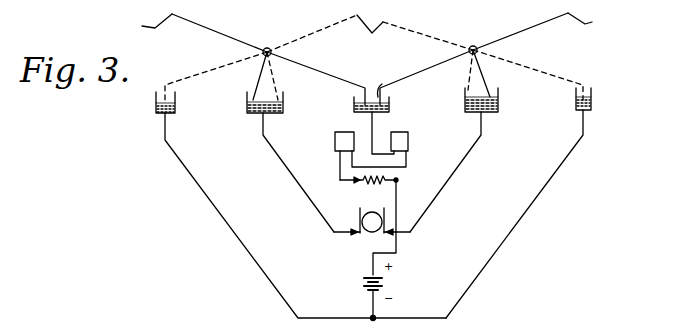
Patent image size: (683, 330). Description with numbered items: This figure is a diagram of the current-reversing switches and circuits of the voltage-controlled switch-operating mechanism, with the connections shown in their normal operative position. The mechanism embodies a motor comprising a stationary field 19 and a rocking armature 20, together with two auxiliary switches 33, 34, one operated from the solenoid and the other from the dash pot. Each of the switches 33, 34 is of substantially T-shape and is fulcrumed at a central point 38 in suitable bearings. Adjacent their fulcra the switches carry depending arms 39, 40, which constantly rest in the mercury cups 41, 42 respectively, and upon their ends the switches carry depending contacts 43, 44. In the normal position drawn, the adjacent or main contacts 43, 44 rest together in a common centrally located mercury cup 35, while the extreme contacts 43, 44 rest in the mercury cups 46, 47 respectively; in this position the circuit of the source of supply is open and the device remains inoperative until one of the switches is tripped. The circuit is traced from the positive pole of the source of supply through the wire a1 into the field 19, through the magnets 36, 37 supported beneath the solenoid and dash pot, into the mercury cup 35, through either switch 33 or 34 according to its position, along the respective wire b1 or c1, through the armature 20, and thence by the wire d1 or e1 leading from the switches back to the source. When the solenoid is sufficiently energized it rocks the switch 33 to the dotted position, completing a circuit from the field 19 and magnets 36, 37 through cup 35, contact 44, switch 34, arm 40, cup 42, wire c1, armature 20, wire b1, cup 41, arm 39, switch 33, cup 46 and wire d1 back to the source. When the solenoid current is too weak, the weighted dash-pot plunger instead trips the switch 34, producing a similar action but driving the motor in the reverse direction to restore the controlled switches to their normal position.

The stationary field 19 is at (366, 183).
The rocking armature 20 is at (367, 233).
The auxiliary switch 33 is at (268, 59).
The auxiliary switch 34 is at (474, 59).
The mercury cup 35 is at (390, 104).
The magnet 36 is at (338, 143).
The magnet 37 is at (410, 138).
The fulcrum 38 is at (270, 48).
The depending arm 39 is at (256, 79).
The depending arm 40 is at (488, 86).
The mercury cup 41 is at (249, 114).
The mercury cup 42 is at (499, 111).
The depending contact 43 is at (357, 103).
The depending contact 44 is at (492, 54).
The mercury cup 46 is at (156, 112).
The mercury cup 47 is at (592, 98).
The wire a1 is at (397, 244).
The wire b1 is at (313, 207).
The wire c1 is at (435, 200).
The wire d1 is at (243, 240).
The wire e1 is at (500, 256).